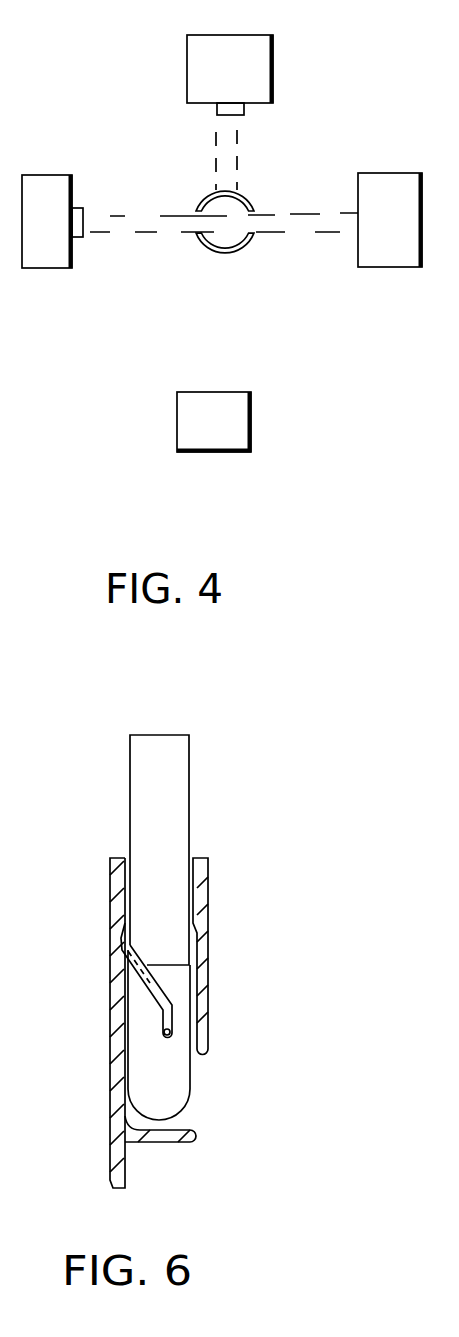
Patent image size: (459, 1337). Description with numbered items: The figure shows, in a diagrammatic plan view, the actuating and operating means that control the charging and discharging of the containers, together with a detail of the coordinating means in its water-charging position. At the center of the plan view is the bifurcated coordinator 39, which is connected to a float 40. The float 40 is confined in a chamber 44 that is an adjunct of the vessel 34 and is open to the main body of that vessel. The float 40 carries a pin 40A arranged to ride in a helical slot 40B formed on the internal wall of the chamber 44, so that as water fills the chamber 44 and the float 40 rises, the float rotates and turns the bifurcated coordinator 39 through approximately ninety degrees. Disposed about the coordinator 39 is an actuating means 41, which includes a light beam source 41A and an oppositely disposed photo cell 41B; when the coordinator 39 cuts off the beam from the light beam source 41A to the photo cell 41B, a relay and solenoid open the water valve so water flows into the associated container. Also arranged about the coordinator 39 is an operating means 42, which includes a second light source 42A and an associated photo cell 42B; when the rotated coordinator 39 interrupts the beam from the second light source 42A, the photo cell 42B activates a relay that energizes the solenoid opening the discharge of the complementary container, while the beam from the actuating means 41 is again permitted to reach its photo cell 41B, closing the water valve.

In FIG. 6, the vessel 34 is at (110, 1088).
In FIG. 4, the bifurcated coordinator 39 is at (238, 253).
In FIG. 6, the bifurcated coordinator 39 is at (189, 790).
In FIG. 6, the float 40 is at (190, 1084).
In FIG. 6, the pin 40A is at (173, 1030).
In FIG. 6, the helical slot 40B is at (158, 983).
In FIG. 4, the actuating means 41 is at (281, 51).
In FIG. 4, the light beam source 41A is at (266, 112).
In FIG. 4, the photo cell 41B is at (251, 424).
In FIG. 4, the operating means 42 is at (68, 171).
In FIG. 4, the second light source 42A is at (72, 268).
In FIG. 4, the photo cell 42B is at (405, 268).
In FIG. 6, the chamber 44 is at (185, 1122).